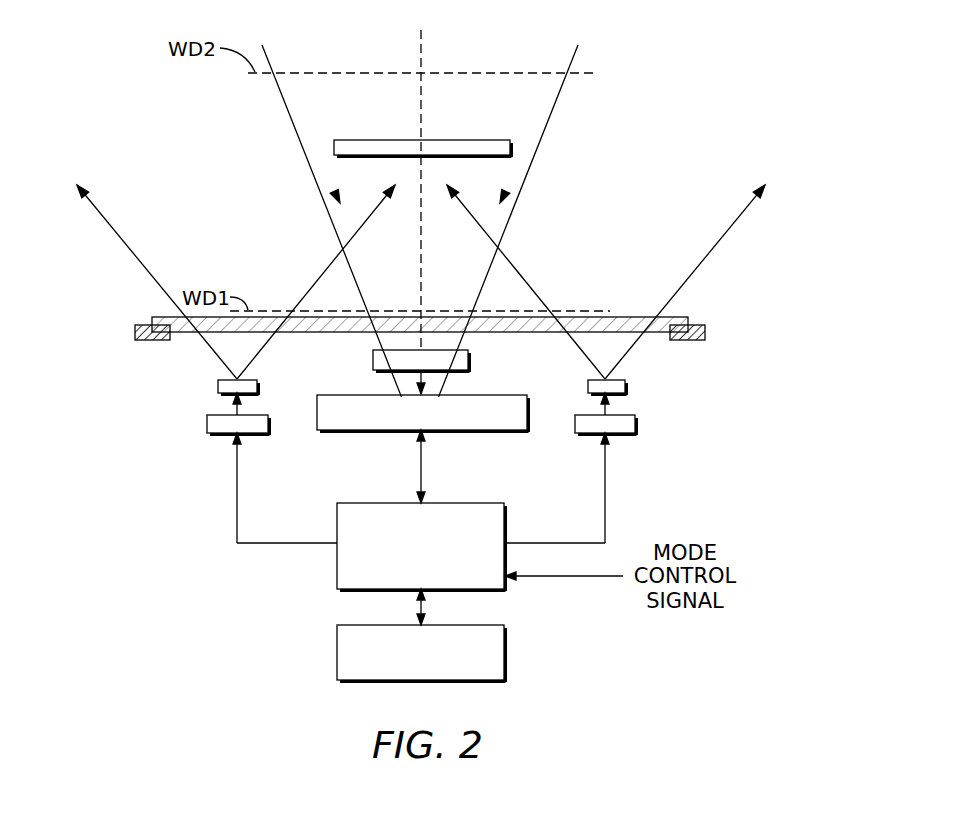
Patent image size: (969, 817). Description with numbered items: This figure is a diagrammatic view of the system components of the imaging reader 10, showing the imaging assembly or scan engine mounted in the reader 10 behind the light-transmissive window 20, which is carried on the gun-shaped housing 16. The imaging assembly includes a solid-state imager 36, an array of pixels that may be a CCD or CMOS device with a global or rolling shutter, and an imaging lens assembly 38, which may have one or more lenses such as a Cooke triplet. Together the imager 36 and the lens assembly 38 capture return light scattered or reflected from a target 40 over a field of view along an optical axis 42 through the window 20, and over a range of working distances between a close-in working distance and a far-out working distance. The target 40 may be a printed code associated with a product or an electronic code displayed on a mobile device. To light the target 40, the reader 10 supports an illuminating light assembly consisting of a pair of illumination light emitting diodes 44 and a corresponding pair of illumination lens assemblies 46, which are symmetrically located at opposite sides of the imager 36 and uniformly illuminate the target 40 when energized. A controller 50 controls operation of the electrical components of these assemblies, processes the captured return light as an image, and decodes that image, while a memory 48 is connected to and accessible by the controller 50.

The imaging reader 10 is at (685, 180).
The housing 16 is at (693, 340).
The light-transmissive window 20 is at (158, 317).
The imager 36 is at (482, 393).
The imaging lens assembly 38 is at (373, 361).
The target 40 is at (477, 140).
The optical axis 42 is at (421, 52).
The illumination light sources 44 is at (207, 424).
The illumination lens assemblies 46 is at (218, 386).
The memory 48 is at (492, 623).
The controller 50 is at (368, 502).